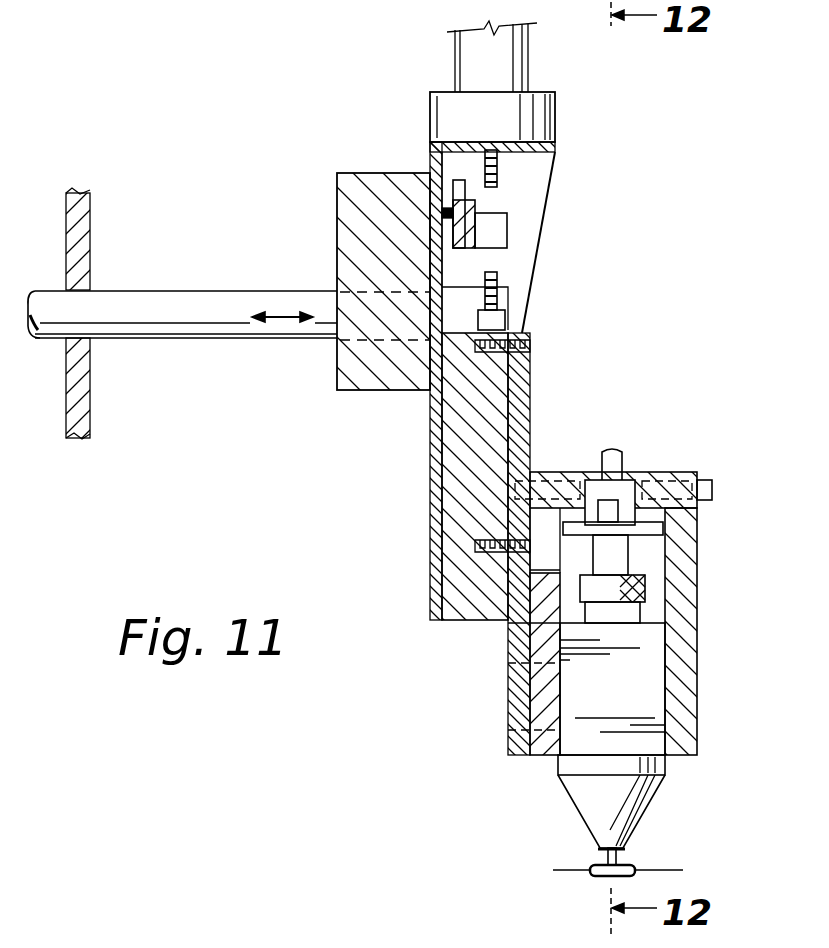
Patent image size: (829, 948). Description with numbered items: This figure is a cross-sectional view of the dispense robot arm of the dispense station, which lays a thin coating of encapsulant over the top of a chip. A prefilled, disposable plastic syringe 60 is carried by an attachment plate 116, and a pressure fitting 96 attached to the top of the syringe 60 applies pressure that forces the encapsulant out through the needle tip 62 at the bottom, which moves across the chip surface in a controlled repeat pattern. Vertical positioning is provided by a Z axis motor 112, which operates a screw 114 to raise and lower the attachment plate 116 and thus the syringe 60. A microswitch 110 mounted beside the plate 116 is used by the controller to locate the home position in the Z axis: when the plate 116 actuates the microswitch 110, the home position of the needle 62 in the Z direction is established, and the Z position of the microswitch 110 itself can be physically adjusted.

The Z axis motor 112 is at (430, 112).
The screw 114 is at (497, 168).
The microswitch 110 is at (505, 230).
The attachment plate 116 is at (530, 383).
The pressure fitting 96 is at (620, 492).
The syringe 60 is at (623, 557).
The needle tip 62 is at (617, 858).